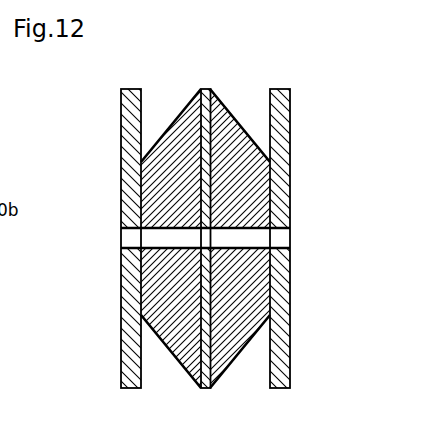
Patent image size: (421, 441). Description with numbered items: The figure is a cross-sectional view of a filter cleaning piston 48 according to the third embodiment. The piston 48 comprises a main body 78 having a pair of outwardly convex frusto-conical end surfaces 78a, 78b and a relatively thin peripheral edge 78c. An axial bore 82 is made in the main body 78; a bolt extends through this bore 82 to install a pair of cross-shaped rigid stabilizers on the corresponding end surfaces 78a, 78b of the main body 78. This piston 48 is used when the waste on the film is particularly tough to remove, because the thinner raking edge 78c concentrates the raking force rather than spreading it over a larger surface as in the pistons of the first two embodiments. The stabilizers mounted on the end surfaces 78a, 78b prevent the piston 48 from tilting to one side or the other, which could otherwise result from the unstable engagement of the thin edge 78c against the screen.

The main body 78 is at (210, 237).
The frusto-conical end surface 78a is at (167, 348).
The frusto-conical end surface 78b is at (254, 348).
The peripheral edge 78c is at (206, 88).
The axial bore 82 is at (252, 236).
The piston 48 is at (311, 262).